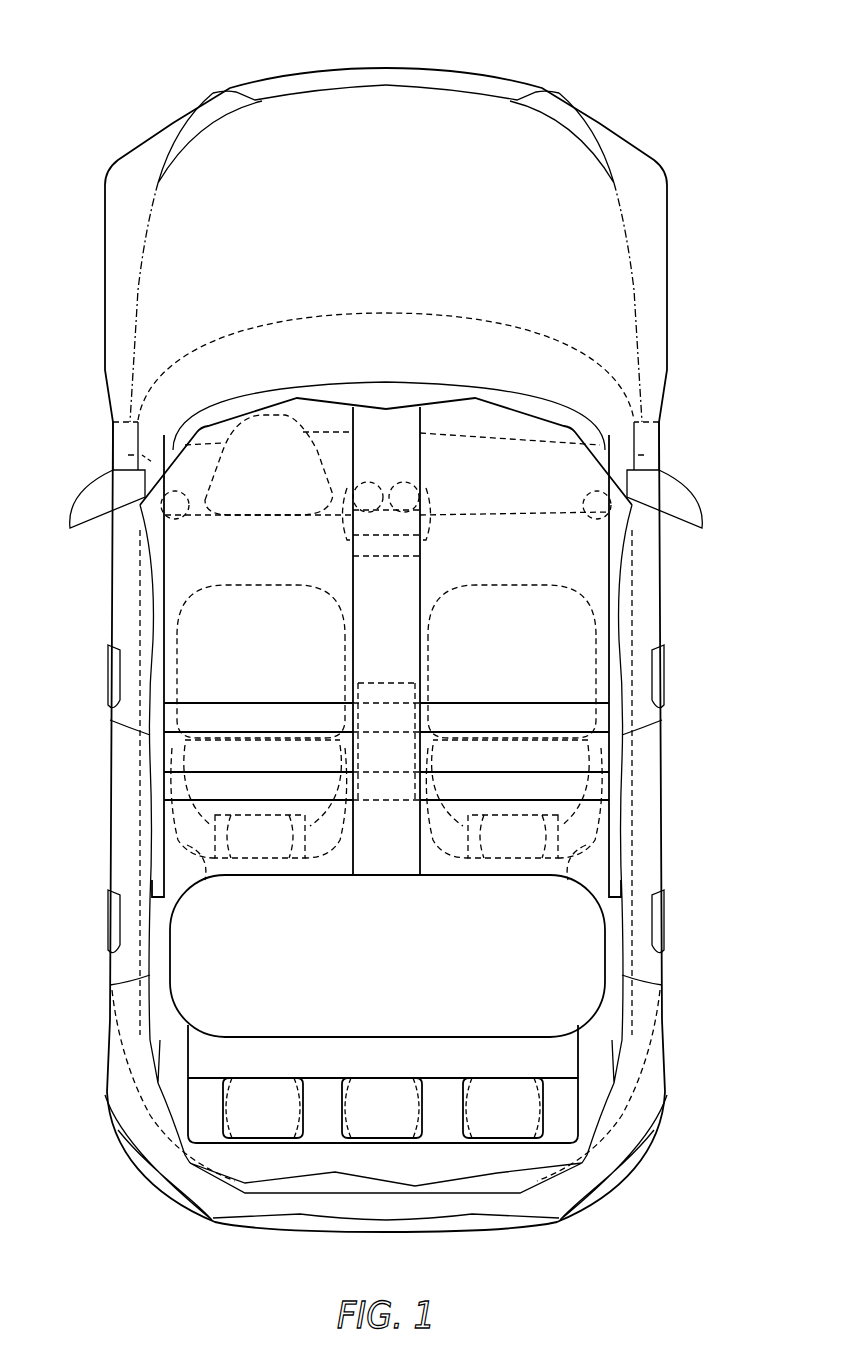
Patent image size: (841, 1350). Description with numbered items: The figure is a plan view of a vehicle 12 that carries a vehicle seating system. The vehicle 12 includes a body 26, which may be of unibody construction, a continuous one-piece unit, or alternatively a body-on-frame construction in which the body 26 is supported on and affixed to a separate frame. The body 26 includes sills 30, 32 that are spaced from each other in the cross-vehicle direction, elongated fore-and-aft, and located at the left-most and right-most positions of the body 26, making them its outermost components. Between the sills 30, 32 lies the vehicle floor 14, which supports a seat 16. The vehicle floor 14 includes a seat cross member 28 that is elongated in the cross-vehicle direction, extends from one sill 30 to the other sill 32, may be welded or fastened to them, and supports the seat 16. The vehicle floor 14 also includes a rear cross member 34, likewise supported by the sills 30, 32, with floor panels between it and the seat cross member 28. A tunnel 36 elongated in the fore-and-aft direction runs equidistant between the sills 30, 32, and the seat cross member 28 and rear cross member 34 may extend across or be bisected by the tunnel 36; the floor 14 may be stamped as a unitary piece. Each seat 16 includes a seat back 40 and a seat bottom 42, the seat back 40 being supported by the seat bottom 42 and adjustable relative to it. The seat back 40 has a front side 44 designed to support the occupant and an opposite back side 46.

The vehicle 12 is at (84, 54).
The vehicle floor 14 is at (197, 535).
The seat 16 is at (182, 606).
The body 26 is at (150, 462).
The seat cross member 28 is at (240, 703).
The sill 30 is at (167, 578).
The sill 32 is at (606, 578).
The rear cross member 34 is at (312, 802).
The tunnel 36 is at (421, 447).
The seat back 40 is at (187, 845).
The seat bottom 42 is at (268, 595).
The front side 44 is at (271, 768).
The back side 46 is at (205, 880).